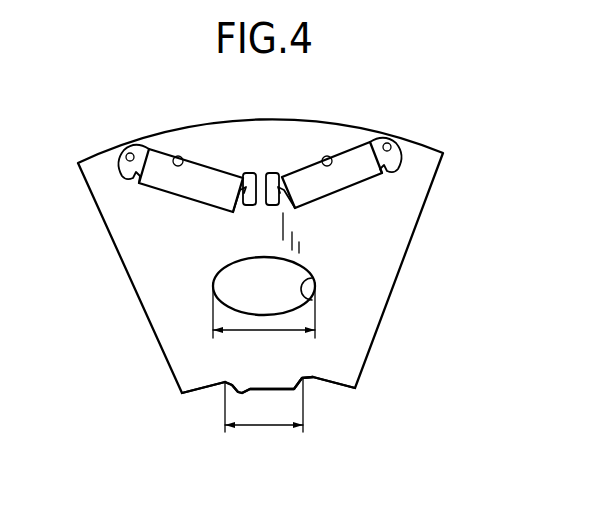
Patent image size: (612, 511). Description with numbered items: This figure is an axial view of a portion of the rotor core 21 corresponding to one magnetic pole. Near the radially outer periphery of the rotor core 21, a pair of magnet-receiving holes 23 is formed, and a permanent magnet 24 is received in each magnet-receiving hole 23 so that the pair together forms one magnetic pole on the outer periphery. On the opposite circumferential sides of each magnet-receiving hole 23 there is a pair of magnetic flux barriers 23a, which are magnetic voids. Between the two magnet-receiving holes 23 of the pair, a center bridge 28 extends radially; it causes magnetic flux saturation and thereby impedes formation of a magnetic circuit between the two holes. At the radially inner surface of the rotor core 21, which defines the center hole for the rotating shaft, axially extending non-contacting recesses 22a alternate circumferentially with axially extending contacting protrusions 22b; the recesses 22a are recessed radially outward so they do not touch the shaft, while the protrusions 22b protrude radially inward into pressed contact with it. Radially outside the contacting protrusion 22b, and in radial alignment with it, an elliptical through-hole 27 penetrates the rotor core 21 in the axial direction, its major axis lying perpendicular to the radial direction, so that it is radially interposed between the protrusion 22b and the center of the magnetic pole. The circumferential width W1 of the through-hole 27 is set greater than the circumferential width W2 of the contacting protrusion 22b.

The rotor core 21 is at (147, 333).
The non-contacting recess 22a is at (197, 392).
The contacting protrusion 22b is at (250, 390).
The magnet-receiving hole 23 is at (181, 158).
The magnetic flux barrier 23a is at (131, 154).
The permanent magnet 24 is at (182, 183).
The through-hole 27 is at (313, 273).
The center bridge 28 is at (243, 194).
The circumferential width of the through-holes W1 is at (264, 320).
The circumferential width of the contacting protrusions W2 is at (264, 416).